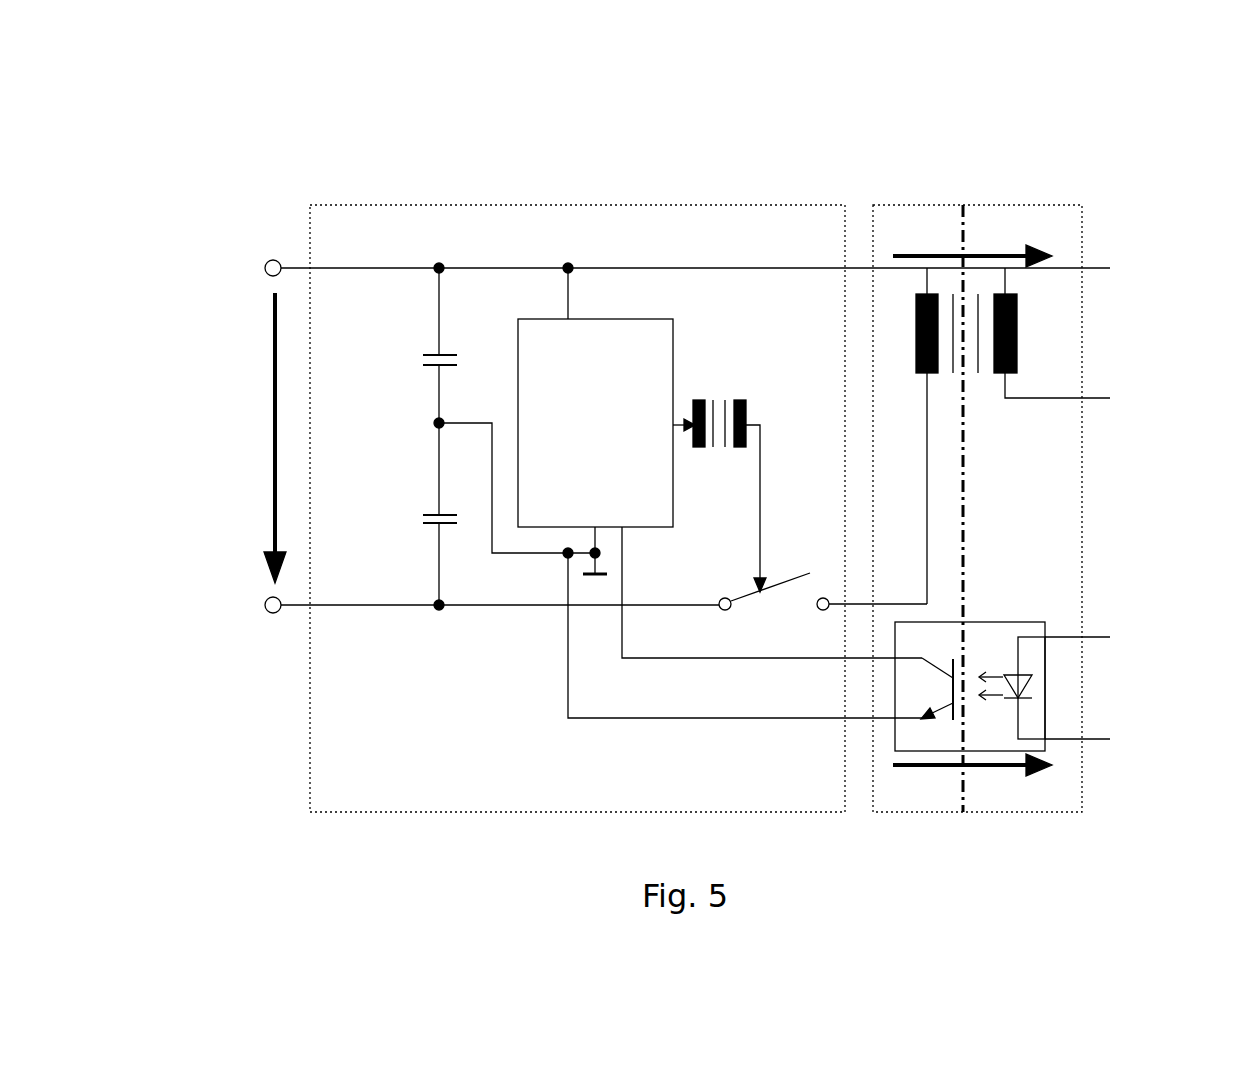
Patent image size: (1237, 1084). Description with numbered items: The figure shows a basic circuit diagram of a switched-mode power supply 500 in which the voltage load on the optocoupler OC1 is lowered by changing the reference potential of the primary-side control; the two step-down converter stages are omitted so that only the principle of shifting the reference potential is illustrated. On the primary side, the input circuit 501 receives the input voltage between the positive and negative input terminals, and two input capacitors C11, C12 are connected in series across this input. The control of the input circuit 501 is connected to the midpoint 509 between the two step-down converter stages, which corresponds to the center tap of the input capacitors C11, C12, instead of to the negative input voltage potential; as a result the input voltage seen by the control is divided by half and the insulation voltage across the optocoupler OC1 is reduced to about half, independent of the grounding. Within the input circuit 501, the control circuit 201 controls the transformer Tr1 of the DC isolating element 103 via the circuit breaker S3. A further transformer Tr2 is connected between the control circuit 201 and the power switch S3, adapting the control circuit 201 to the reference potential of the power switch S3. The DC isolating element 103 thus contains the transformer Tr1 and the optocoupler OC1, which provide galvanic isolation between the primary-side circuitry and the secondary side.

The switched-mode power supply 500 is at (1108, 150).
The input circuit 501 is at (618, 492).
The DC isolating element 103 is at (991, 492).
The control circuit 201 is at (720, 493).
The midpoint 509 is at (426, 420).
The input capacitor C11 is at (412, 345).
The input capacitor C12 is at (412, 514).
The transformer Tr1 is at (993, 436).
The transformer Tr2 is at (719, 474).
The circuit breaker S3 is at (823, 606).
The optocoupler OC1 is at (1002, 670).